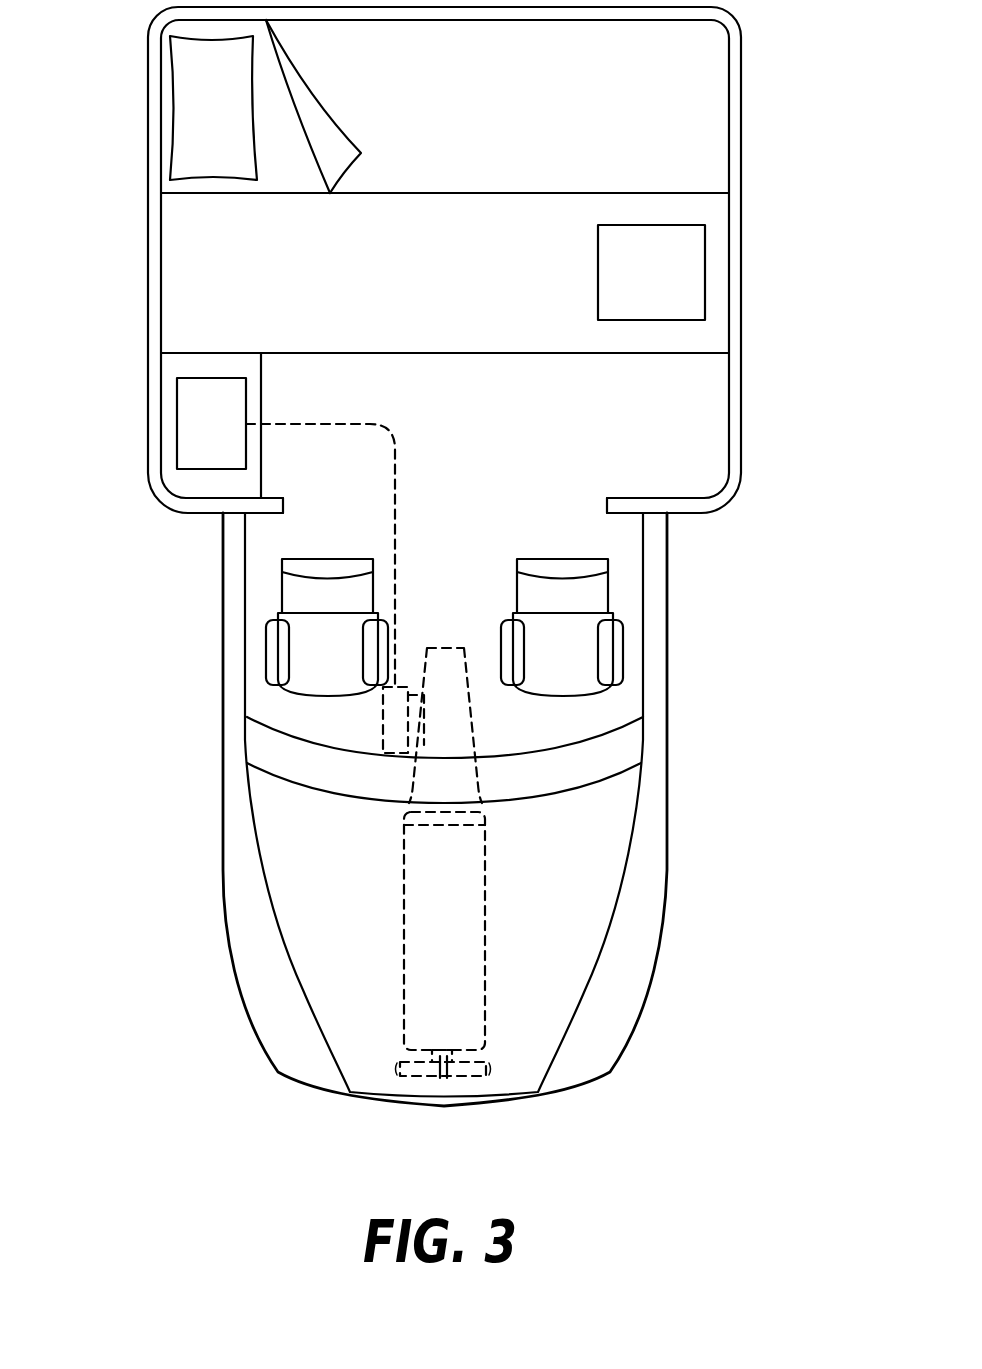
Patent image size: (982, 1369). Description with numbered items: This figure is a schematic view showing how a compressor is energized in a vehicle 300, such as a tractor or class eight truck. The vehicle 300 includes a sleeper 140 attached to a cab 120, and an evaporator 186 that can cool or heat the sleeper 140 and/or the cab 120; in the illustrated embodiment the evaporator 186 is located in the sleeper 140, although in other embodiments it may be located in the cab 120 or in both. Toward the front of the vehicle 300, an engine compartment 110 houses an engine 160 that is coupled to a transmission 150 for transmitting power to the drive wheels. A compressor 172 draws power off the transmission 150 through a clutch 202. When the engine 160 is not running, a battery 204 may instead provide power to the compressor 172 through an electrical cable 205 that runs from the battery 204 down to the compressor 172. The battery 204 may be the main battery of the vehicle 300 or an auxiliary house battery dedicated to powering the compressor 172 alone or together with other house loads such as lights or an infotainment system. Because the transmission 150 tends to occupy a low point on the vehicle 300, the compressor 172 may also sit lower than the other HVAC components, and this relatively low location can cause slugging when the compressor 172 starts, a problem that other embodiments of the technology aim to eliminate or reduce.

The vehicle 300 is at (133, 574).
The engine compartment 110 is at (381, 946).
The cab 120 is at (713, 440).
The sleeper 140 is at (642, 203).
The evaporator 186 is at (705, 270).
The battery 204 is at (177, 418).
The electrical cable 205 is at (396, 503).
The compressor 172 is at (397, 727).
The clutch 202 is at (424, 745).
The transmission 150 is at (466, 717).
The engine 160 is at (486, 943).